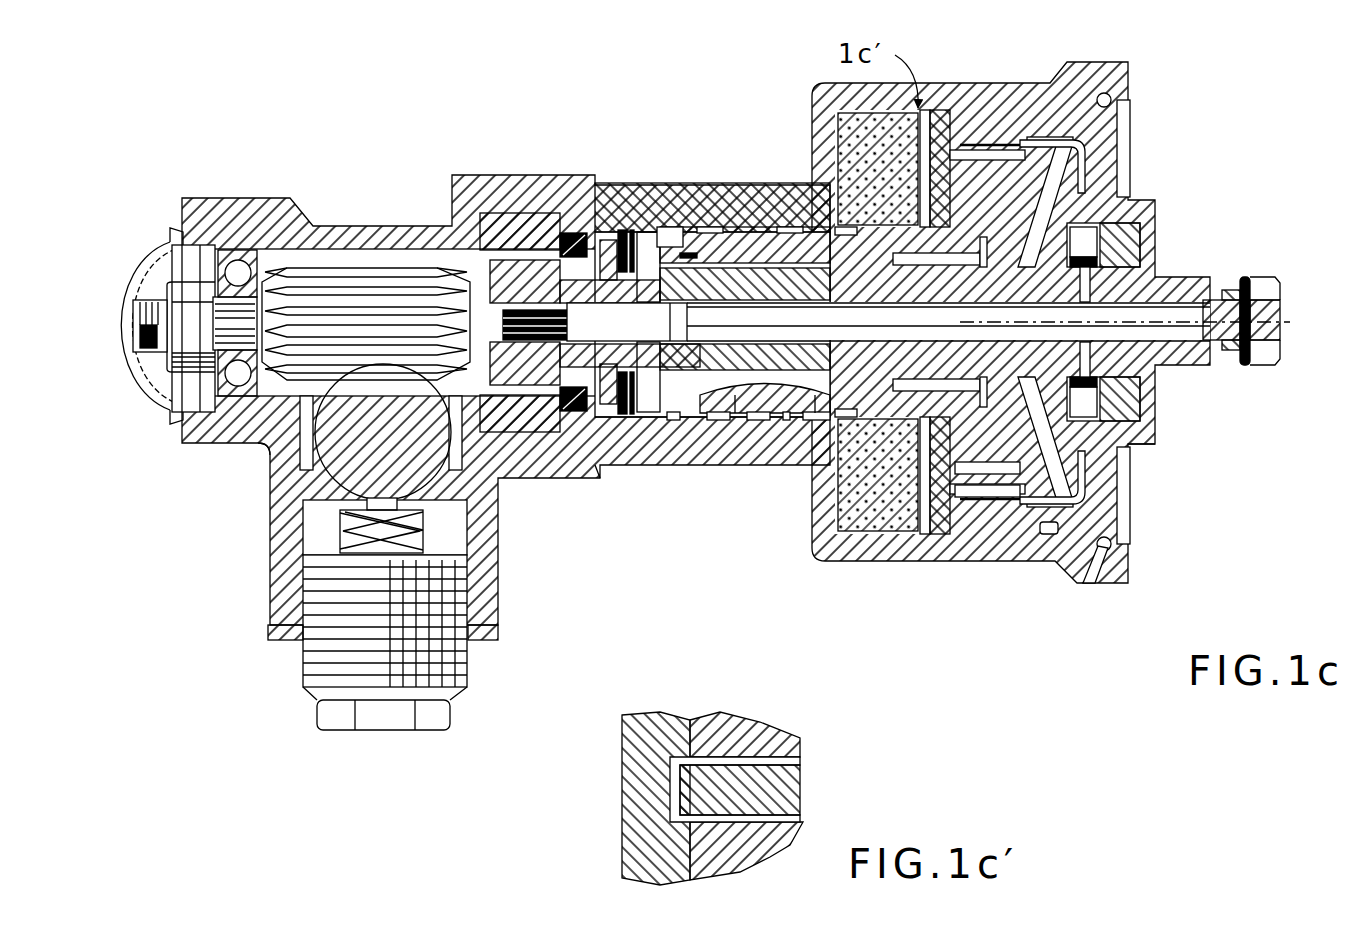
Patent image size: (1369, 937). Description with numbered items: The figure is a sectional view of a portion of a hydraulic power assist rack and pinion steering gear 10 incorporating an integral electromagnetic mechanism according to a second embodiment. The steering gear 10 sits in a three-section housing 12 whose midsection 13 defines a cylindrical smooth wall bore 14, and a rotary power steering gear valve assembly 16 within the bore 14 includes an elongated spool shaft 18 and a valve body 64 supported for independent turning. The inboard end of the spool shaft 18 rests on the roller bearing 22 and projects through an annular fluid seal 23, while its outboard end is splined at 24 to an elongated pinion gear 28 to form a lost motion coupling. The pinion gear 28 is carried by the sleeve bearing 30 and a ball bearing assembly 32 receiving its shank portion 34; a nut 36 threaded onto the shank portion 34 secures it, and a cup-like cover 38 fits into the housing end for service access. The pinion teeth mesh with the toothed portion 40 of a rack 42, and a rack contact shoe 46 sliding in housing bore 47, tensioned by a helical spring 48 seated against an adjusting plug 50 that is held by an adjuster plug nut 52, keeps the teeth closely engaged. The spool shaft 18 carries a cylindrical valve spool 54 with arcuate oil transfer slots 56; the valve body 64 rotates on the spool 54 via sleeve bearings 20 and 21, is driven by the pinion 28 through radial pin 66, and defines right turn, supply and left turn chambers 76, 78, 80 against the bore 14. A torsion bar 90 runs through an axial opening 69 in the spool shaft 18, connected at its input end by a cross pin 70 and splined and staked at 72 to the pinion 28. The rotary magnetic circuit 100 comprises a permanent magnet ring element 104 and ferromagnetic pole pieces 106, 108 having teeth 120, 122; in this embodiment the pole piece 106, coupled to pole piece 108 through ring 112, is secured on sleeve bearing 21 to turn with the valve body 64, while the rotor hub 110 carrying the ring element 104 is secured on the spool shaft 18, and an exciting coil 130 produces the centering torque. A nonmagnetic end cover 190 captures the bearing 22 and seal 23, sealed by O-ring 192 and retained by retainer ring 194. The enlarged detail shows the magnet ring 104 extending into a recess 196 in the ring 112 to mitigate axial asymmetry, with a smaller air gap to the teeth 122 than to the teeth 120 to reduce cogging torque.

In FIG. 1c, the steering gear 10 is at (627, 112).
In FIG. 1c, the housing 12 is at (548, 150).
In FIG. 1c, the midsection 13 is at (757, 183).
In FIG. 1c, the bore 14 is at (690, 420).
In FIG. 1c, the rotary power steering gear valve assembly 16 is at (660, 440).
In FIG. 1c, the spool shaft 18 is at (1207, 285).
In FIG. 1c, the sleeve bearing 20 is at (682, 230).
In FIG. 1c, the sleeve bearing 21 is at (803, 270).
In FIG. 1c, the roller bearing 22 is at (1125, 430).
In FIG. 1c, the fluid seal 23 is at (1142, 244).
In FIG. 1c, the spline 24 is at (647, 427).
In FIG. 1c, the pinion gear 28 is at (368, 280).
In FIG. 1c, the sleeve bearing 30 is at (528, 220).
In FIG. 1c, the ball bearing assembly 32 is at (238, 385).
In FIG. 1c, the shank portion 34 is at (217, 328).
In FIG. 1c, the nut 36 is at (177, 290).
In FIG. 1c, the cover 38 is at (148, 404).
In FIG. 1c, the toothed portion 40 is at (398, 414).
In FIG. 1c, the rack 42 is at (280, 452).
In FIG. 1c, the rack contact shoe 46 is at (312, 525).
In FIG. 1c, the housing bore 47 is at (418, 512).
In FIG. 1c, the helical spring 48 is at (402, 545).
In FIG. 1c, the adjusting plug 50 is at (320, 655).
In FIG. 1c, the adjuster plug nut 52 is at (268, 630).
In FIG. 1c, the valve spool 54 is at (750, 280).
In FIG. 1c, the oil transfer slots 56 is at (760, 420).
In FIG. 1c, the valve body 64 is at (820, 427).
In FIG. 1c, the radial pin 66 is at (622, 230).
In FIG. 1c, the axial opening 69 is at (710, 416).
In FIG. 1c, the cross pin 70 is at (1246, 290).
In FIG. 1c, the splined and staked connection 72 is at (556, 352).
In FIG. 1c, the right turn chamber 76 is at (702, 430).
In FIG. 1c, the supply chamber 78 is at (737, 440).
In FIG. 1c, the left turn chamber 80 is at (790, 425).
In FIG. 1c, the torsion bar 90 is at (1185, 348).
In FIG. 1c, the rotary magnetic circuit 100 is at (1075, 128).
In FIG. 1c, the permanent magnet ring element 104 is at (1002, 168).
In FIG. 1c', the permanent magnet ring element 104 is at (760, 798).
In FIG. 1c, the pole piece 106 is at (977, 150).
In FIG. 1c', the pole piece 106 is at (712, 843).
In FIG. 1c, the pole piece 108 is at (987, 130).
In FIG. 1c', the pole piece 108 is at (727, 742).
In FIG. 1c, the rotor hub 110 is at (1090, 190).
In FIG. 1c, the ring 112 is at (928, 106).
In FIG. 1c', the ring 112 is at (630, 805).
In FIG. 1c, the teeth 120 is at (1022, 490).
In FIG. 1c, the teeth 122 is at (1060, 528).
In FIG. 1c, the exciting coil 130 is at (870, 520).
In FIG. 1c, the end cover 190 is at (1158, 440).
In FIG. 1c, the O-ring 192 is at (1060, 545).
In FIG. 1c, the retainer ring 194 is at (1130, 560).
In FIG. 1c, the recess 196 is at (926, 534).
In FIG. 1c', the recess 196 is at (673, 770).